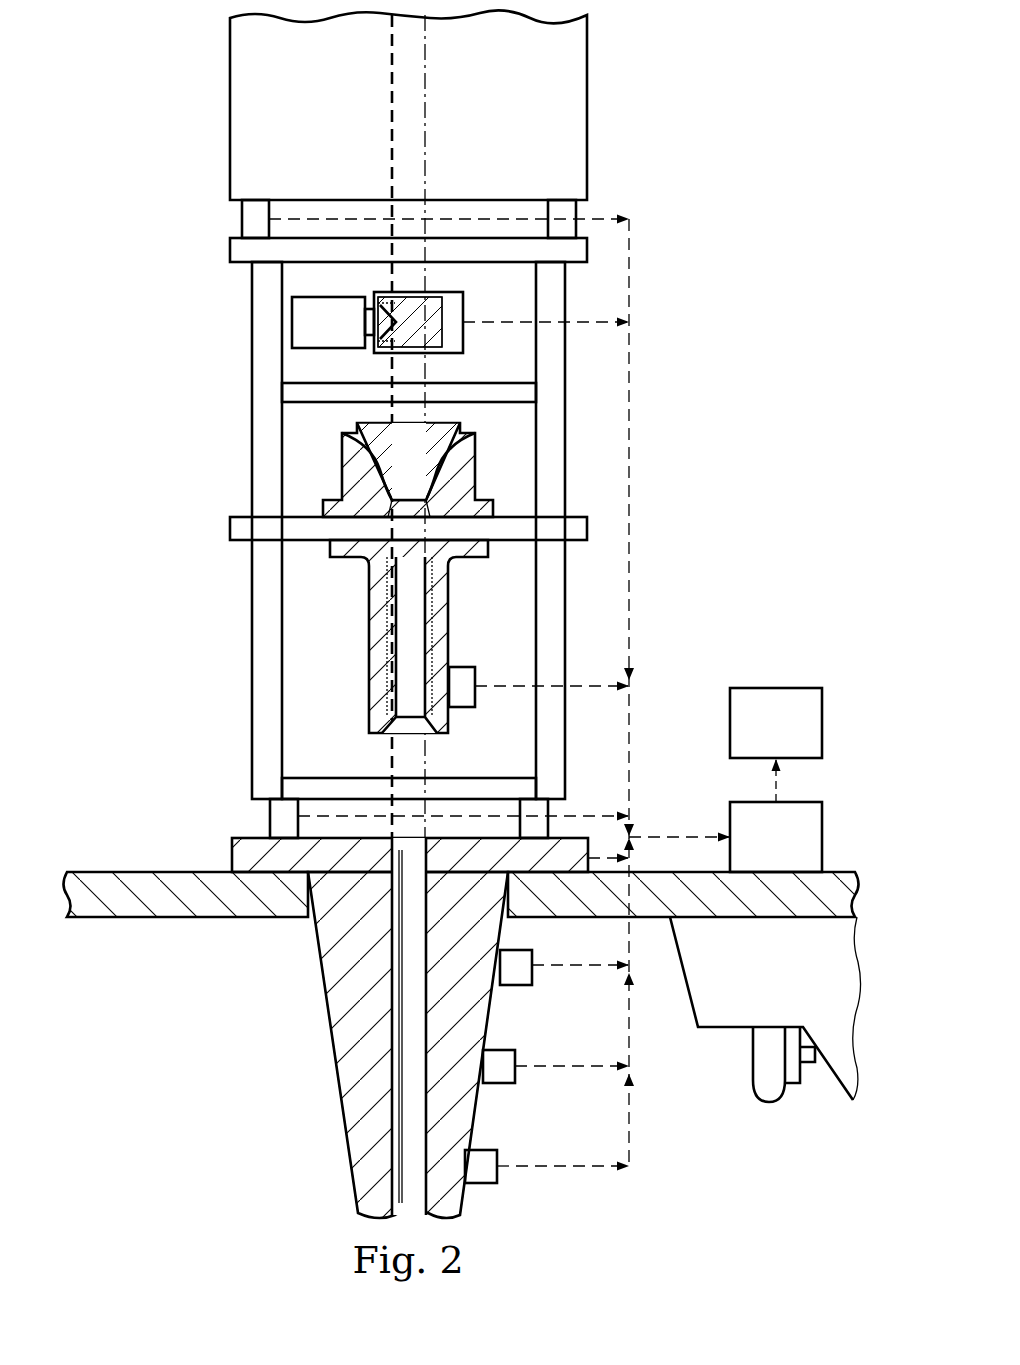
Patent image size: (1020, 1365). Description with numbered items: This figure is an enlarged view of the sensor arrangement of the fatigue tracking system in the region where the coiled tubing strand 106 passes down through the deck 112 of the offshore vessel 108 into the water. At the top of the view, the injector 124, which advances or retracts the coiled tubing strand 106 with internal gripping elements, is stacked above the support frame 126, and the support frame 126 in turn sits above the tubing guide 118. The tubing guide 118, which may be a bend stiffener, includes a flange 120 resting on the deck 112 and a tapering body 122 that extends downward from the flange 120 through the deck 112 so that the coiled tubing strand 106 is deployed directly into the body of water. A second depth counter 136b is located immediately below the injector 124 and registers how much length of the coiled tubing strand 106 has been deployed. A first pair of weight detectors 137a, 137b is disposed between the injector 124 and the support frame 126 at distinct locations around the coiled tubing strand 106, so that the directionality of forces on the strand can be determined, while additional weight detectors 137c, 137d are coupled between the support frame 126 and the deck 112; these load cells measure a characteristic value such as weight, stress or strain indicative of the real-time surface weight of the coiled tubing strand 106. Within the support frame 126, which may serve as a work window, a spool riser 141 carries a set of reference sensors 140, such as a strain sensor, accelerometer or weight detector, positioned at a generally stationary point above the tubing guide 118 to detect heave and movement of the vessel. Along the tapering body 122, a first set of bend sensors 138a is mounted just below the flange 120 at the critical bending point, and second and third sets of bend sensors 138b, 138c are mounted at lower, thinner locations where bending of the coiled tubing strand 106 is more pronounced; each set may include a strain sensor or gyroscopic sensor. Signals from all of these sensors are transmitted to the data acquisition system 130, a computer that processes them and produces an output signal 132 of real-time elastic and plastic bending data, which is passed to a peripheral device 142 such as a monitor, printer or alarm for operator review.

The coiled tubing strand 106 is at (391, 105).
The offshore vessel 108 is at (720, 1042).
The deck 112 is at (95, 872).
The tubing guide 118 is at (240, 995).
The flange 120 is at (232, 855).
The tapering body 122 is at (343, 1078).
The injector 124 is at (230, 110).
The support frame 126 is at (252, 390).
The data acquisition system 130 is at (757, 852).
The output signal 132 is at (778, 790).
The second depth counter 136b is at (292, 322).
The first weight detector 137a is at (241, 222).
The second weight detector 137b is at (561, 200).
The third weight detector 137c is at (270, 820).
The fourth weight detector 137d is at (520, 812).
The first set of bend sensors 138a is at (532, 978).
The second set of bend sensors 138b is at (515, 1080).
The third set of bend sensors 138c is at (497, 1180).
The reference sensors 140 is at (462, 667).
The spool riser 141 is at (369, 648).
The peripheral device 142 is at (757, 738).